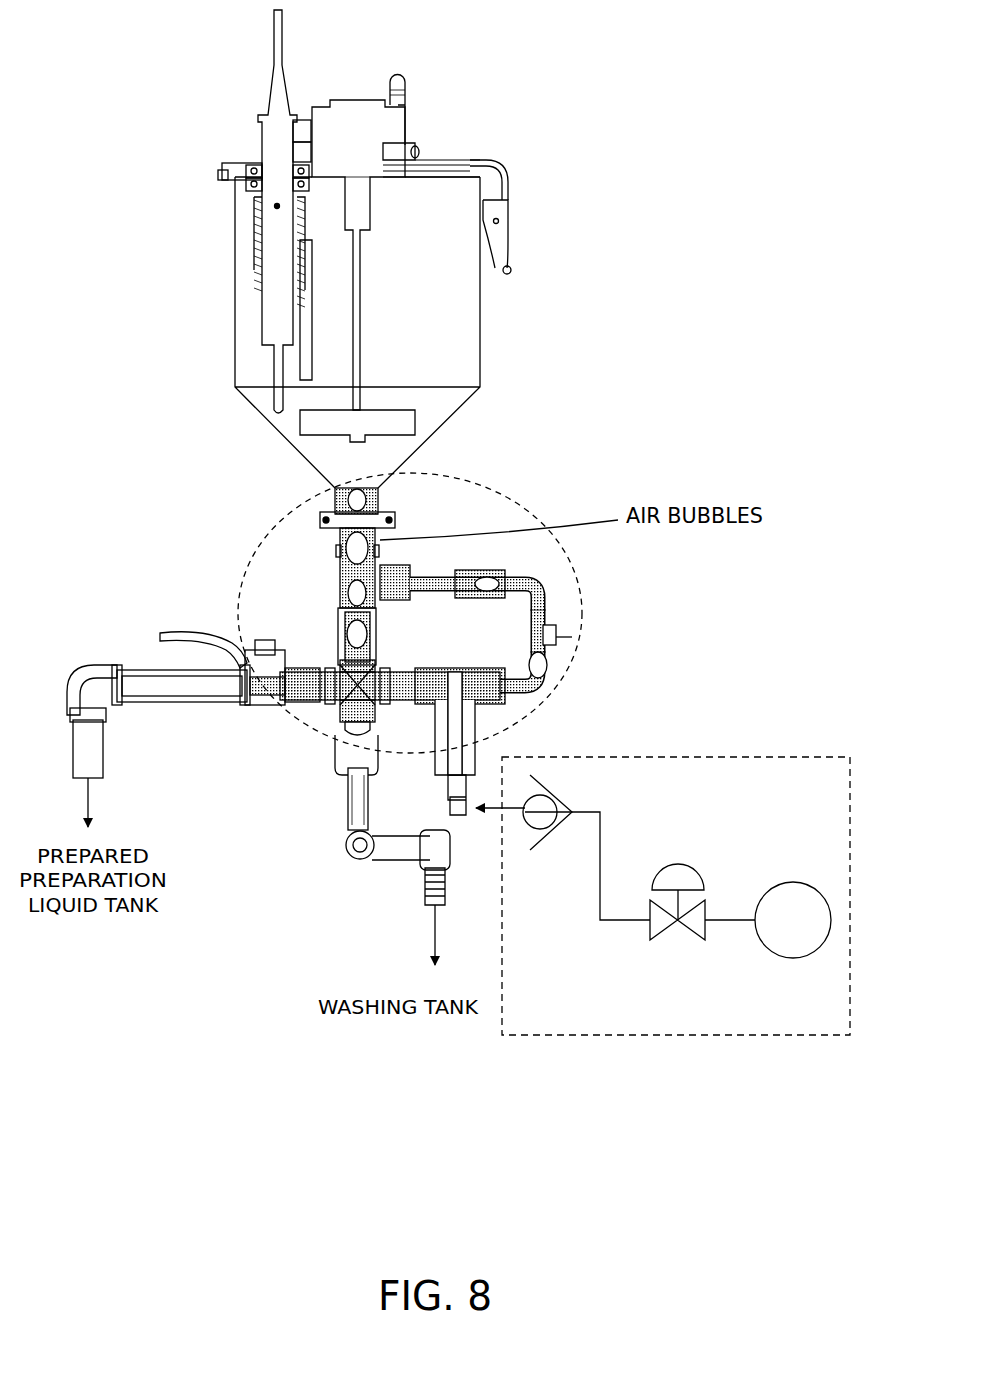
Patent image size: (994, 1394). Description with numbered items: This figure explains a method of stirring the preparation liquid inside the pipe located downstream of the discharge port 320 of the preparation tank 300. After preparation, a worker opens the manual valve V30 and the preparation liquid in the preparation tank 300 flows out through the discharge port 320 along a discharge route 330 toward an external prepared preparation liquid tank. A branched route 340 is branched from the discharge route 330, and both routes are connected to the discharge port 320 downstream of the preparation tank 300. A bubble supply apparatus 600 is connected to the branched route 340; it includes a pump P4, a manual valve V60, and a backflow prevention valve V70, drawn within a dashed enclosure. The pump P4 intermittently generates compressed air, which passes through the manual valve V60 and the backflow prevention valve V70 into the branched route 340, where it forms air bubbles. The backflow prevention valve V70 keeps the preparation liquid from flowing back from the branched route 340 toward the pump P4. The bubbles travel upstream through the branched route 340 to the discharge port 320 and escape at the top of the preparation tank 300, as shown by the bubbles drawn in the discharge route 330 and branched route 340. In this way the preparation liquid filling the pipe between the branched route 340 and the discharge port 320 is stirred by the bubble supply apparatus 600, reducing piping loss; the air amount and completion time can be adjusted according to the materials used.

The preparation tank 300 is at (235, 263).
The discharge port 320 is at (320, 513).
The discharge route 330 is at (340, 585).
The branched route 340 is at (485, 592).
The manual valve V30 is at (258, 706).
The bubble supply apparatus 600 is at (778, 757).
The backflow prevention valve V70 is at (538, 830).
The manual valve V60 is at (693, 935).
The pump P4 is at (800, 958).